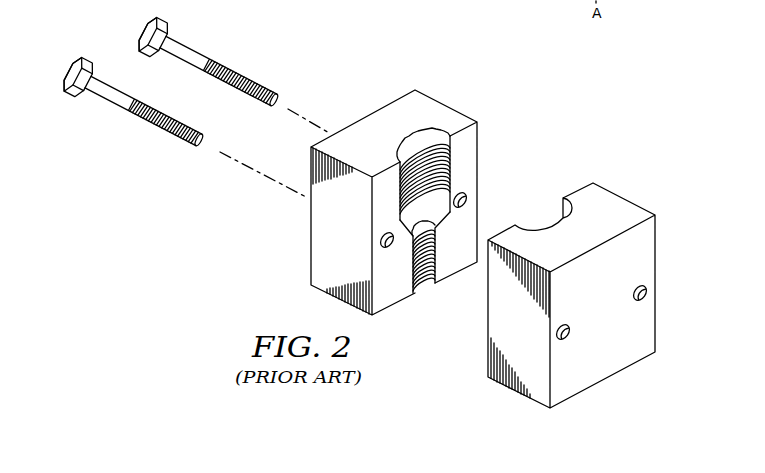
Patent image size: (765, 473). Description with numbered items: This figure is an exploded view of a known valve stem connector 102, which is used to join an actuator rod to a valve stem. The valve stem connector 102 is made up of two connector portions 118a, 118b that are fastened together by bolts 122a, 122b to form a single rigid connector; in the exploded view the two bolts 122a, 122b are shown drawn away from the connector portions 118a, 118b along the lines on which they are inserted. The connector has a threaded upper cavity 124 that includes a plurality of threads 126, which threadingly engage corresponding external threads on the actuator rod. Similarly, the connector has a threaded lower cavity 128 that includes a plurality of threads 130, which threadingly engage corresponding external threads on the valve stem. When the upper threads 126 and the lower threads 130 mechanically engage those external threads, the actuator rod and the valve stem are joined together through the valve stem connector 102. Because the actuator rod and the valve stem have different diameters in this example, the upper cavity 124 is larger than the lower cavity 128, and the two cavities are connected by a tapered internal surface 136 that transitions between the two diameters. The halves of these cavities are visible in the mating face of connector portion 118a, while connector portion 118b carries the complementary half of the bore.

The valve stem connector 102 is at (247, 271).
The connector portion 118a is at (443, 105).
The connector portion 118b is at (622, 197).
The bolt 122a is at (113, 105).
The bolt 122b is at (188, 47).
The threaded upper cavity 124 is at (413, 132).
The threads 126 is at (447, 167).
The threaded lower cavity 128 is at (423, 288).
The threads 130 is at (436, 243).
The tapered internal surface 136 is at (408, 228).